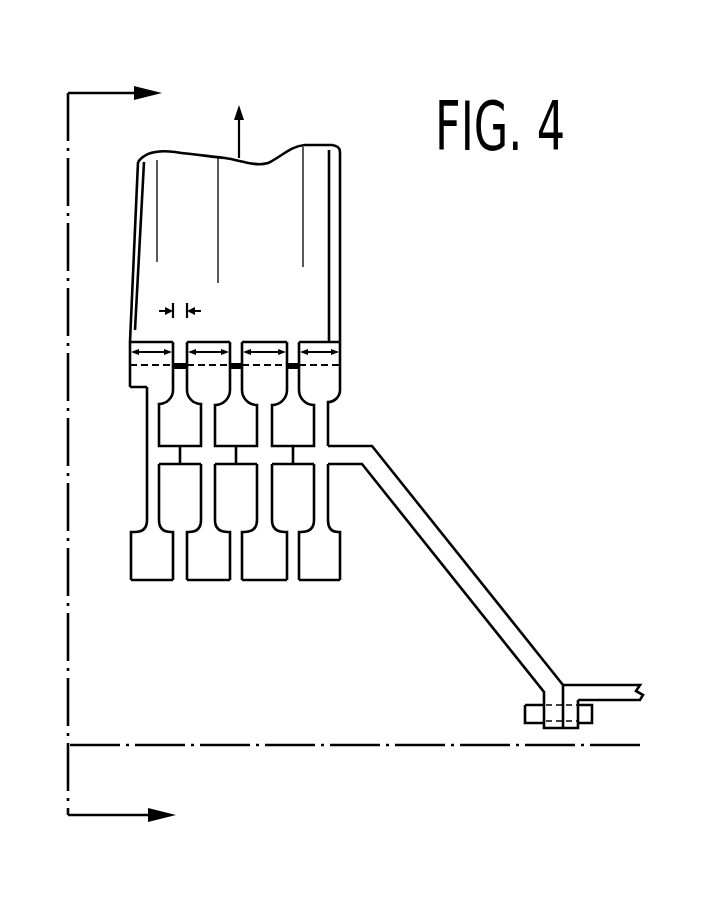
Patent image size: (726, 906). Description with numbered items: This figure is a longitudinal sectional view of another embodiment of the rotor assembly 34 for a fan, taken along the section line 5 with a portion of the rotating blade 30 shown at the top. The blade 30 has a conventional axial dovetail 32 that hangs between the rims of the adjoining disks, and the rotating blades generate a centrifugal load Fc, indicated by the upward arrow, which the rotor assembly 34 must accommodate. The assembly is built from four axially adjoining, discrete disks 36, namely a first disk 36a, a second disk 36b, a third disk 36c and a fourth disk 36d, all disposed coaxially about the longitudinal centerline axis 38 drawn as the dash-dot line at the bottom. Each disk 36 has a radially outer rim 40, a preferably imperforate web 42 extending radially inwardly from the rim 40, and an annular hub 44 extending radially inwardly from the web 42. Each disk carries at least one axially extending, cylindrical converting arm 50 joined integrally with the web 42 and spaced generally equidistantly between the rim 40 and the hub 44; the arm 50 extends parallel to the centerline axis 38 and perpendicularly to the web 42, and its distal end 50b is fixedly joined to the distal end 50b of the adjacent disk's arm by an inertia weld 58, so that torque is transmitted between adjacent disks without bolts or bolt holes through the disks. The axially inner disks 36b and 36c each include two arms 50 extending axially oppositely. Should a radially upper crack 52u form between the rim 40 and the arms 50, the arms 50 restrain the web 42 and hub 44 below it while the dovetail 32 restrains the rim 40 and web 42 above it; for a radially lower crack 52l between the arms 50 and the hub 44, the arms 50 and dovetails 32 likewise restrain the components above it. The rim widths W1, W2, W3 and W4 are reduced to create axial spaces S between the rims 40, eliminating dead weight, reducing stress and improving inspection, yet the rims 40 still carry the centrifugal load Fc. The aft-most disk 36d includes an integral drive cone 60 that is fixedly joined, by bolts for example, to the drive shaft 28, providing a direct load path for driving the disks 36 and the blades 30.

The section line of FIG. 5 is at (122, 454).
The drive shaft 28 is at (593, 685).
The rotor blade 30 is at (341, 225).
The axial dovetail 32 is at (290, 347).
The rotor assembly 34 is at (249, 489).
The disk 36 is at (249, 510).
The first disk 36a is at (152, 592).
The second disk 36b is at (205, 594).
The third disk 36c is at (268, 594).
The fourth disk 36d is at (325, 594).
The longitudinal centerline axis 38 is at (280, 746).
The rim 40 is at (130, 367).
The web 42 is at (147, 462).
The hub 44 is at (131, 547).
The converting arm 50 is at (188, 469).
The distal end of arm 50b is at (200, 397).
The radially upper crack 52u is at (147, 405).
The radially lower crack 52l is at (149, 490).
The inertia weld 58 is at (234, 466).
The drive cone 60 is at (486, 588).
The axial space S is at (163, 311).
The rim width of first disk W1 is at (156, 342).
The rim width of second disk W2 is at (210, 342).
The rim width of third disk W3 is at (262, 342).
The rim width of fourth disk W4 is at (323, 342).
The centrifugal load Fc is at (240, 137).